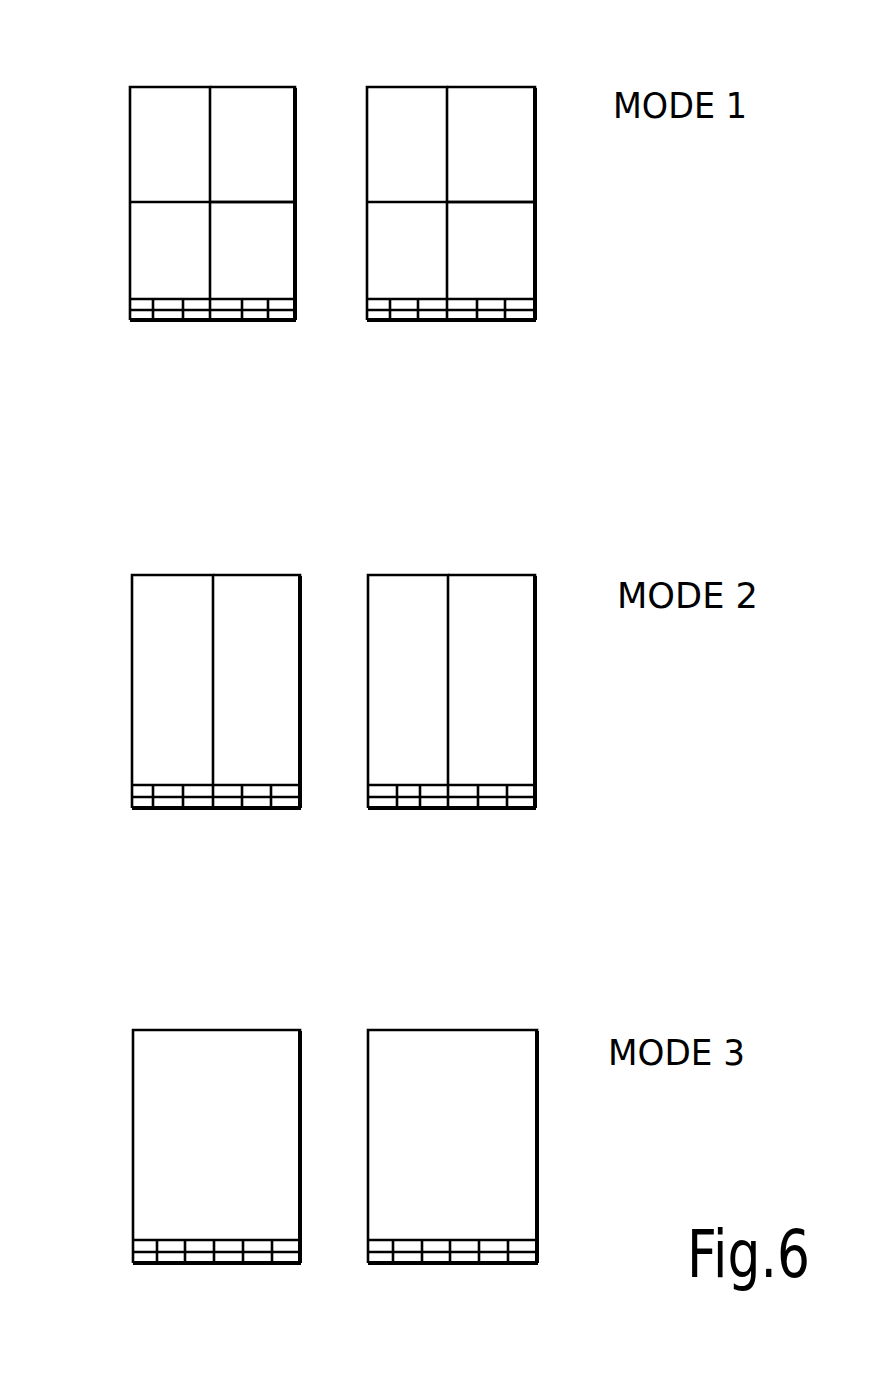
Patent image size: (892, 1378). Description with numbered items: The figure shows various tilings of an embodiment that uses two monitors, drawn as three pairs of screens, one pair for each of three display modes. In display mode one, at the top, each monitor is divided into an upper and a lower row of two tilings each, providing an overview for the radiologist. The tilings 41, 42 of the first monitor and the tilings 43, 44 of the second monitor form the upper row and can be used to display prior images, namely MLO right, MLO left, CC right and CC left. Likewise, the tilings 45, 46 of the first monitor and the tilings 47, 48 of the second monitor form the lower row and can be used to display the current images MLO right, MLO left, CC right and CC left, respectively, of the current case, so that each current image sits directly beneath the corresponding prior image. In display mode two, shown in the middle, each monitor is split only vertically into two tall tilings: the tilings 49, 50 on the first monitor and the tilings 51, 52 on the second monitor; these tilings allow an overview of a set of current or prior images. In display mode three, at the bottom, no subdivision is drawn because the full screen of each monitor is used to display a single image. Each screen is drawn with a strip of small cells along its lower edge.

The tiling 41 is at (163, 83).
The tiling 42 is at (250, 83).
The tiling 43 is at (400, 83).
The tiling 44 is at (485, 83).
The tiling 45 is at (128, 266).
The tiling 46 is at (300, 268).
The tiling 47 is at (367, 218).
The tiling 48 is at (537, 242).
The tiling 49 is at (170, 572).
The tiling 50 is at (255, 572).
The tiling 51 is at (405, 572).
The tiling 52 is at (475, 572).